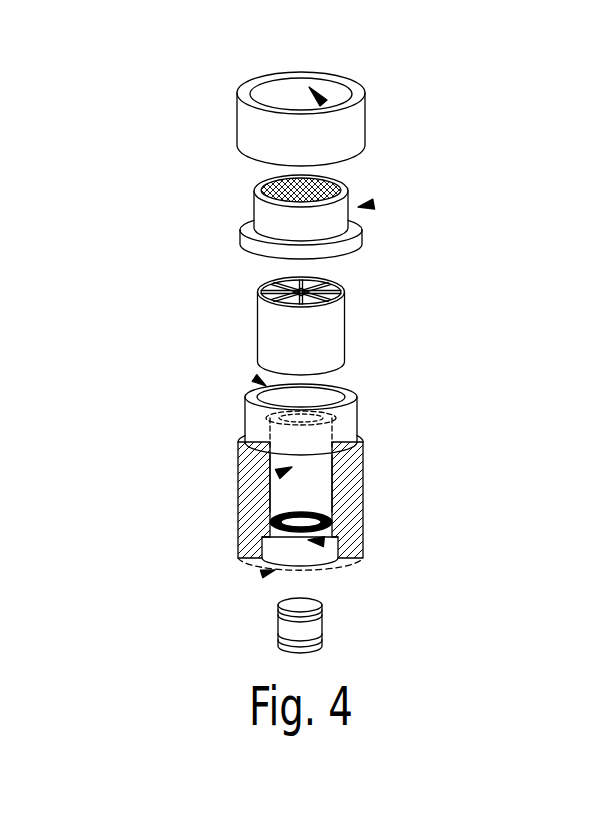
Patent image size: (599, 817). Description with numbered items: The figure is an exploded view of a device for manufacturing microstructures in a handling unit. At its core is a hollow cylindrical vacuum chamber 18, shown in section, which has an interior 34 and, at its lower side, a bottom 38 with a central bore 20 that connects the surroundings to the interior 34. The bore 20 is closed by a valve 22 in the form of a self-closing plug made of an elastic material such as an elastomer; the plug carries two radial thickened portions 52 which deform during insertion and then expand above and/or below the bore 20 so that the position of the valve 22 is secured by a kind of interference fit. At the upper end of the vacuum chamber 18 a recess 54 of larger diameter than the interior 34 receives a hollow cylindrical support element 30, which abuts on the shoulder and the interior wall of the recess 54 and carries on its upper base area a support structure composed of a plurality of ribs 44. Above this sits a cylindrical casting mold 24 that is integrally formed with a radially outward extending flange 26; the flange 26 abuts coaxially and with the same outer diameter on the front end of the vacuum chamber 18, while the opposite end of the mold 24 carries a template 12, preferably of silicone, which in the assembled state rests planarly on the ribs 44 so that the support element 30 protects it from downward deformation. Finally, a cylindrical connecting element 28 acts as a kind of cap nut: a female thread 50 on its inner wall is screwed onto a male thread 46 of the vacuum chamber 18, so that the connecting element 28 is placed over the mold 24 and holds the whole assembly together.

The template 12 is at (342, 180).
The vacuum chamber 18 is at (363, 466).
The bore 20 is at (323, 542).
The valve 22 is at (322, 625).
The mold 24 is at (372, 204).
The flange 26 is at (352, 246).
The connecting element 28 is at (245, 120).
The support element 30 is at (327, 333).
The interior 34 is at (278, 474).
The bottom 38 is at (262, 575).
The ribs 44 is at (265, 282).
The thread 46 is at (244, 418).
The thread 50 is at (312, 88).
The thickened portions 52 is at (313, 613).
The recess 54 is at (258, 380).